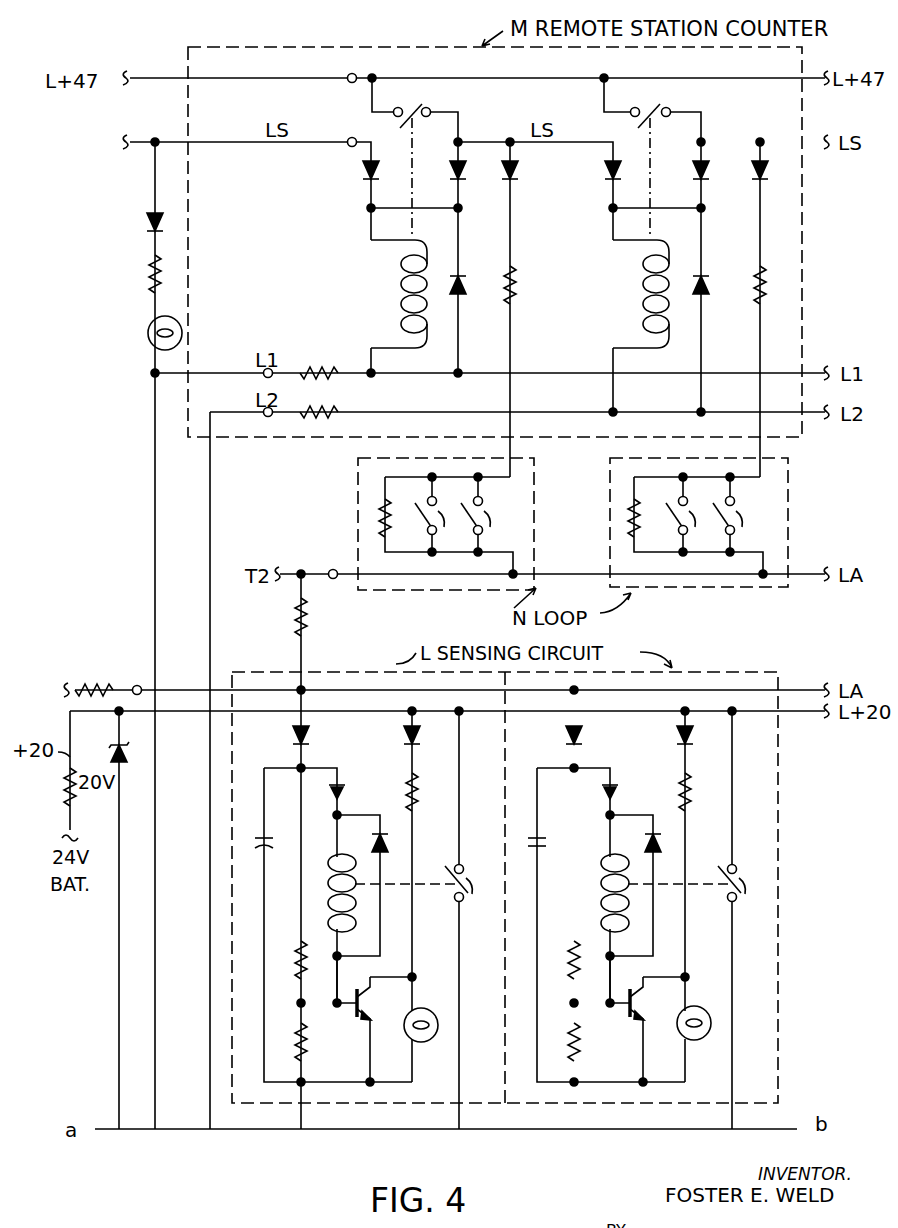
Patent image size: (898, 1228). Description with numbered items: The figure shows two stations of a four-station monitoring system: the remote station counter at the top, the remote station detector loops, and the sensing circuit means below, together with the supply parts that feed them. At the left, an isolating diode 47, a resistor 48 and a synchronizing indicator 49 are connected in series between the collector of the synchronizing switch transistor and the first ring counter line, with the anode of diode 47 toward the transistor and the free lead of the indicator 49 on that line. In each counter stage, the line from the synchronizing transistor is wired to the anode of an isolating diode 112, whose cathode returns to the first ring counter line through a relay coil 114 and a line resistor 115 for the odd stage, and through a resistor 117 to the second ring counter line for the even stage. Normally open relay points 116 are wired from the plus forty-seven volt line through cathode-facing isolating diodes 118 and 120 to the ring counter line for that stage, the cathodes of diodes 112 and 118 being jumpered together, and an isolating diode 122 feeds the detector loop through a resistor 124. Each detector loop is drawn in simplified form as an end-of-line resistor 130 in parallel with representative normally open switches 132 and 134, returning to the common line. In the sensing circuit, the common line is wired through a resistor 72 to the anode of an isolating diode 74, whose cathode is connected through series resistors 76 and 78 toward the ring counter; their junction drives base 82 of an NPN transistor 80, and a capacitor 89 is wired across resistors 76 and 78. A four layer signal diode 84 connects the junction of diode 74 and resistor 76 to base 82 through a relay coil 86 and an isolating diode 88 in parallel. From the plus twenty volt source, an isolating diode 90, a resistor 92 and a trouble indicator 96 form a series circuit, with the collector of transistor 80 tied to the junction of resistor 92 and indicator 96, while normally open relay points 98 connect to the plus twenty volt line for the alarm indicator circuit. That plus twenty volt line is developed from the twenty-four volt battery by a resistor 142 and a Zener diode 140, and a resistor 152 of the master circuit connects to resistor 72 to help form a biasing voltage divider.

The isolating diode 47 is at (150, 238).
The resistor 48 is at (149, 266).
The synchronizing indicator 49 is at (149, 338).
The resistor 72 is at (308, 623).
The isolating diode 74 is at (312, 741).
The resistor 76 is at (580, 968).
The resistor 78 is at (308, 1052).
The NPN transistor 80 is at (372, 1008).
The base 82 is at (357, 993).
The four layer signal diode 84 is at (348, 788).
The relay coil 86 is at (324, 932).
The isolating diode 88 is at (390, 832).
The capacitor 89 is at (266, 835).
The isolating diode 90 is at (416, 752).
The resistor 92 is at (418, 800).
The trouble indicator 96 is at (419, 1008).
The normally open relay points 98 is at (745, 882).
The isolating diode 112 is at (362, 176).
The relay coil 114 is at (396, 298).
The line resistor 115 is at (312, 366).
The normally open relay points 116 is at (410, 110).
The resistor 117 is at (318, 406).
The isolating diode 118 is at (465, 182).
The isolating diode 120 is at (464, 300).
The isolating diode 122 is at (518, 172).
The resistor 124 is at (517, 290).
The end-of-line resistor 130 is at (537, 525).
The normally open switch 132 is at (591, 527).
The normally open switch 134 is at (482, 504).
The Zener diode 140 is at (125, 765).
The resistor 142 is at (66, 792).
The resistor 152 is at (92, 684).